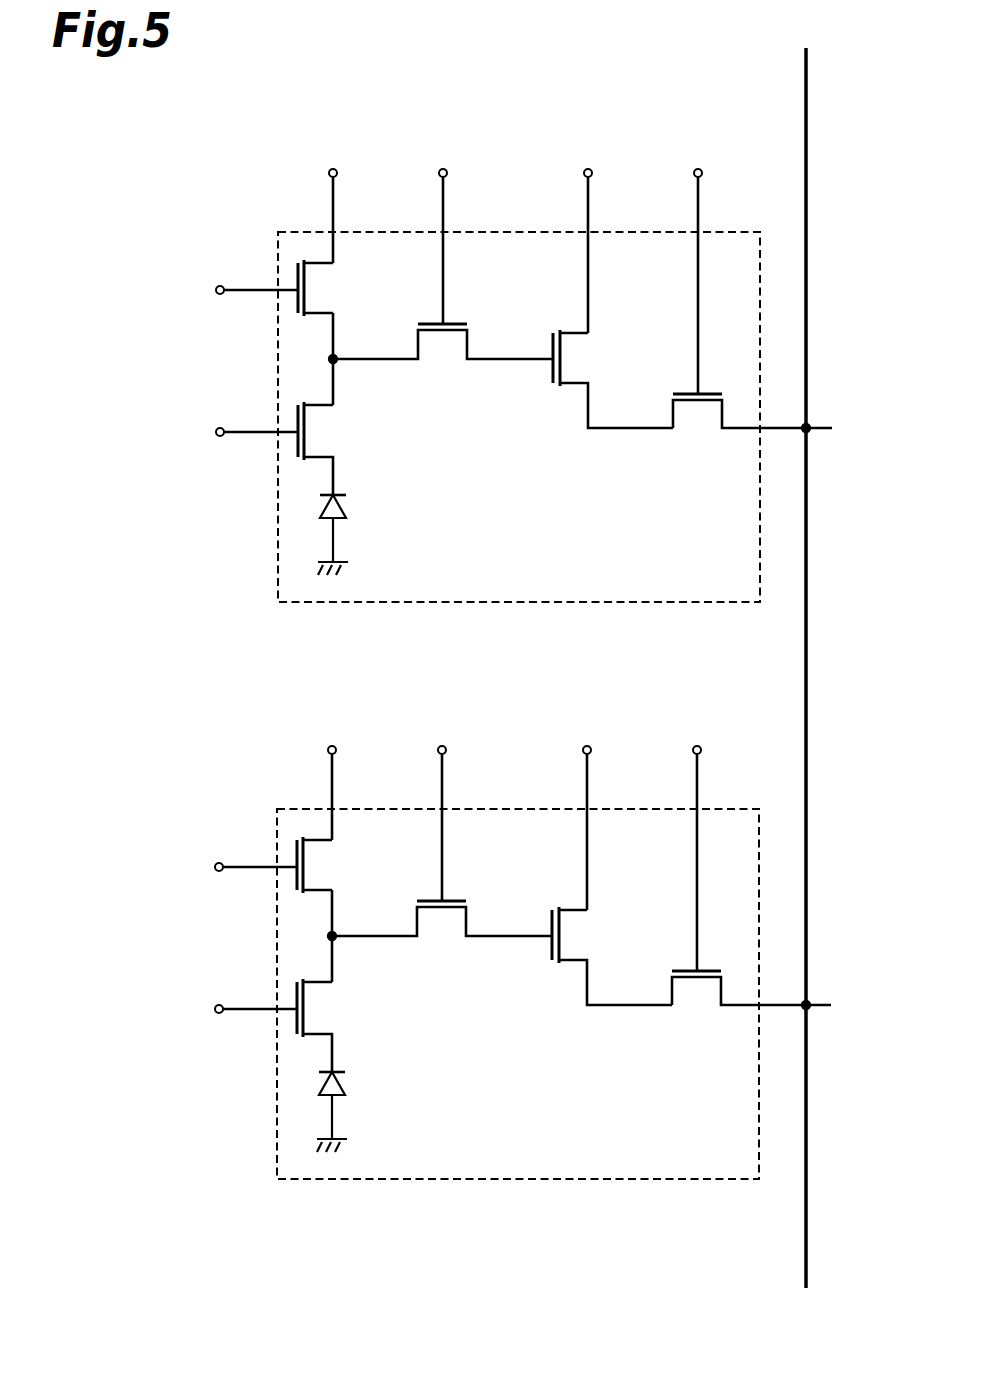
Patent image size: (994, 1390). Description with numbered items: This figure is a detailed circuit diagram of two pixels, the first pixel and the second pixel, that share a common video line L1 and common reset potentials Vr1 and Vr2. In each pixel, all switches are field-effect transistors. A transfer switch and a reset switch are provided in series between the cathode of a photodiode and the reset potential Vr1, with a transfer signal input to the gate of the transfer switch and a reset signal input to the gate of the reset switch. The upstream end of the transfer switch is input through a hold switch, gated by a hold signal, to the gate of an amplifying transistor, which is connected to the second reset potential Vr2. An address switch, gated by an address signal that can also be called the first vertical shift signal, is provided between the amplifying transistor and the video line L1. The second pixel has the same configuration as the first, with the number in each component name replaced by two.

The video line L1 is at (808, 668).
The reset potential Vr1 is at (333, 486).
The second reset potential Vr2 is at (588, 521).